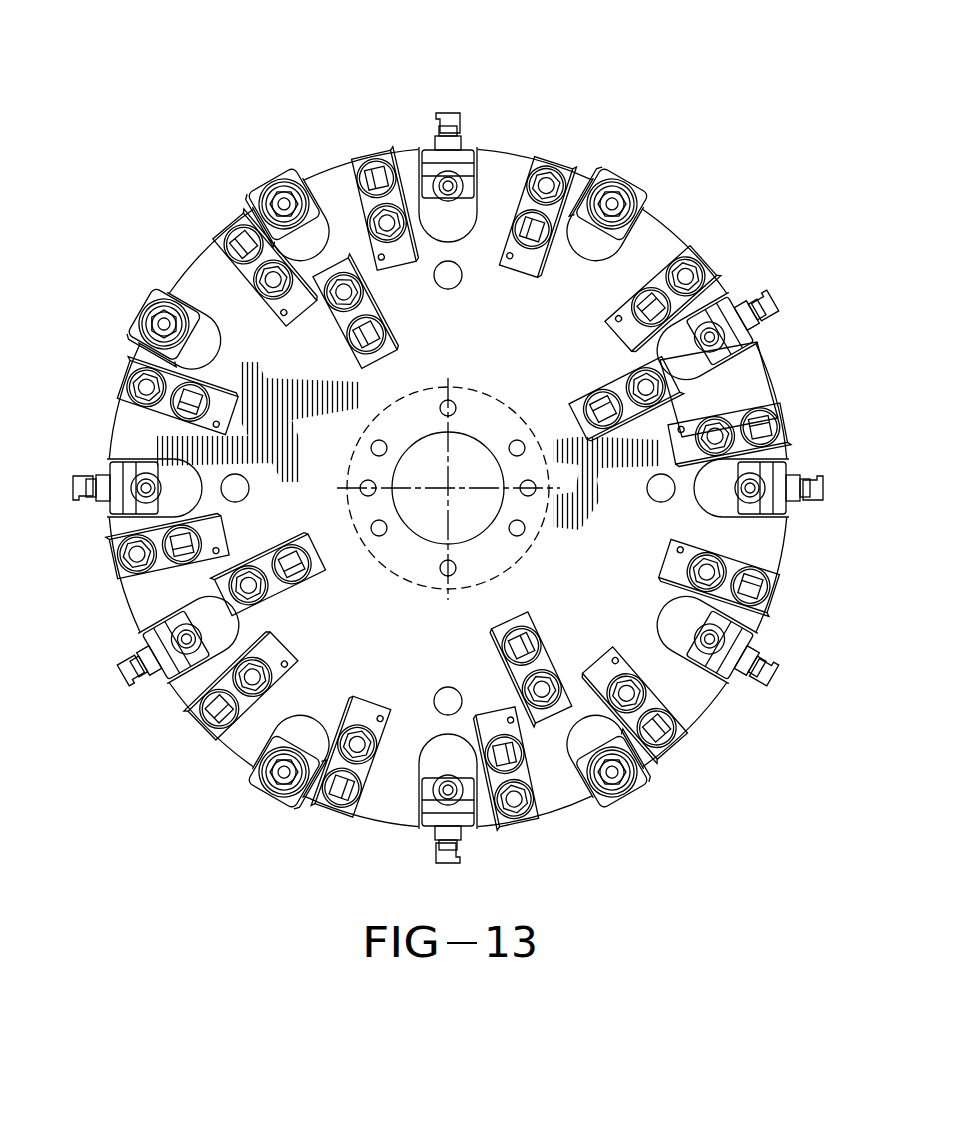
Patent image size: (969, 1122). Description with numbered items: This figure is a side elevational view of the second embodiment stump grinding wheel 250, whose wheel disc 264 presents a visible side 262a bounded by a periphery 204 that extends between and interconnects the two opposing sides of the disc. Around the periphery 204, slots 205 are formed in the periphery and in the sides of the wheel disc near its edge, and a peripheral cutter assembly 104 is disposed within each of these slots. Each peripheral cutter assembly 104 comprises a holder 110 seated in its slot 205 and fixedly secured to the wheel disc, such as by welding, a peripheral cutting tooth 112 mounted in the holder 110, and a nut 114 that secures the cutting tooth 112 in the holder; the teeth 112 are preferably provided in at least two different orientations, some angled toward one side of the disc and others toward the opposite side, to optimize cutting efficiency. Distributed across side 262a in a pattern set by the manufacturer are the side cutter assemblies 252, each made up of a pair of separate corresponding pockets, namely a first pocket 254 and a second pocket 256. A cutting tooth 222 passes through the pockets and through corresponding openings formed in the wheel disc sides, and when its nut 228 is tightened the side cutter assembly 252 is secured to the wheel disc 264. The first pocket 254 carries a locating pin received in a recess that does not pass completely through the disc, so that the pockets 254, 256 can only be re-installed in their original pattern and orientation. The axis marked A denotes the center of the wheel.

The second embodiment stump grinding wheel 250 is at (182, 106).
The side cutter assembly 252 is at (214, 226).
The first pocket 254 is at (236, 232).
The second pocket 256 is at (390, 337).
The cutting tooth 222 is at (276, 298).
The nut 228 is at (282, 303).
The peripheral cutter assembly 104 is at (640, 188).
The holder 110 is at (712, 662).
The peripheral cutting tooth 112 is at (743, 660).
The nut 114 is at (163, 627).
The periphery 204 is at (757, 612).
The slot 205 is at (680, 640).
The wheel disc 264 is at (780, 365).
The wheel disc side 262a is at (372, 669).
The central axis A is at (455, 483).